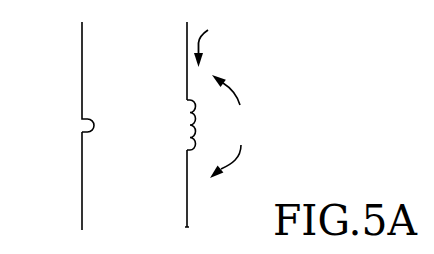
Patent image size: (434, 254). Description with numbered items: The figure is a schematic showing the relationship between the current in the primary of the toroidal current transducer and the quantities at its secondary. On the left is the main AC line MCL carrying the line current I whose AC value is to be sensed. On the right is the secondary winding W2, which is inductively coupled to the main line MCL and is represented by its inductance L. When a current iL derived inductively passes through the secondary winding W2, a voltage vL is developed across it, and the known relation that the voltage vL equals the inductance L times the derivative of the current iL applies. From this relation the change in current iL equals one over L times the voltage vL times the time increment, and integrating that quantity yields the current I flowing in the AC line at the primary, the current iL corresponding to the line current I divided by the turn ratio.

The main AC line MCL is at (82, 69).
The line current I is at (82, 165).
The secondary winding W2 is at (192, 120).
The inductance L is at (201, 128).
The secondary current iL is at (209, 42).
The secondary voltage vL is at (231, 126).